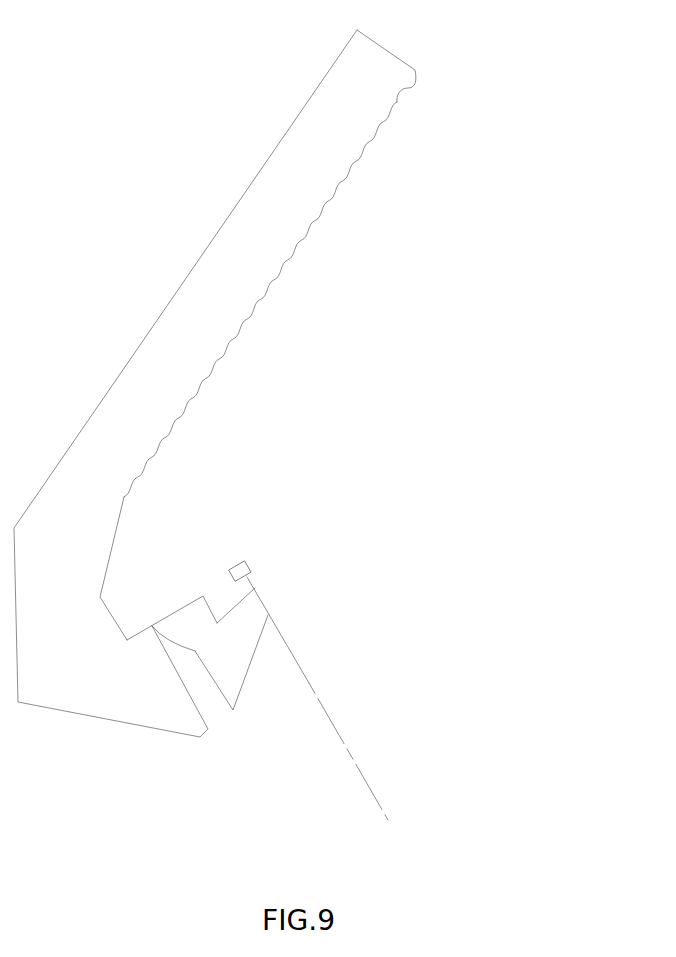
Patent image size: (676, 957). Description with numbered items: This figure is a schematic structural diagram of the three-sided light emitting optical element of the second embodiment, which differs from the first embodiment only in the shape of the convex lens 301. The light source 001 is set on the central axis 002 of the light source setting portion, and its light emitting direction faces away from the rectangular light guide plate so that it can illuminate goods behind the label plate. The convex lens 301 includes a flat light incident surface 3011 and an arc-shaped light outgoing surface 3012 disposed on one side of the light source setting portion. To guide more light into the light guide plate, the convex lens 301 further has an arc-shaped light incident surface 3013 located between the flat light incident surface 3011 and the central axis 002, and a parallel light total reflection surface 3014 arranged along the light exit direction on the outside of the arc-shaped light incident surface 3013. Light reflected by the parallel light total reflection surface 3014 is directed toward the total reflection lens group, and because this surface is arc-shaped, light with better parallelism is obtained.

The convex lens 301 is at (233, 668).
The flat light incident surface 3011 is at (214, 599).
The arc-shaped light outgoing surface 3012 is at (168, 638).
The arc-shaped light incident surface 3013 is at (230, 608).
The parallel light total reflection surface 3014 is at (252, 663).
The light source 001 is at (253, 568).
The central axis 002 is at (333, 727).